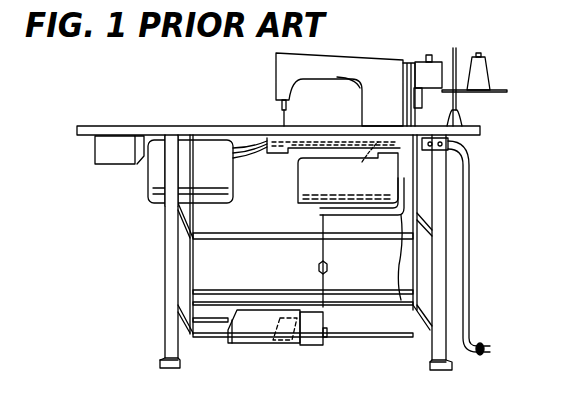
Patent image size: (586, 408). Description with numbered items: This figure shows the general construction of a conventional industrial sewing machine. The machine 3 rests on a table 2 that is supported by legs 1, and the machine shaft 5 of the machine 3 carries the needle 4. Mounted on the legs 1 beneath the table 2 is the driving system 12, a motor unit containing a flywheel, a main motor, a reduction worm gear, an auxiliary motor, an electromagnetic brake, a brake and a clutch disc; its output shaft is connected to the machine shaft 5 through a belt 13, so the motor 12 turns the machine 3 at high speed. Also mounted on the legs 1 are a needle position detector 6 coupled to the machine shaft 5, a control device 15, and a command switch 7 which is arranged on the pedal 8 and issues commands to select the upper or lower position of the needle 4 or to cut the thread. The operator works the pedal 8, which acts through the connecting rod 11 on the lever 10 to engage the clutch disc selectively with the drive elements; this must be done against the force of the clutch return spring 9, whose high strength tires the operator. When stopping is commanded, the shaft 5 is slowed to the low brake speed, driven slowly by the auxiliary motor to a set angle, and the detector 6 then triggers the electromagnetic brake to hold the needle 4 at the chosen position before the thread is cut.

The legs 1 is at (168, 287).
The table 2 is at (123, 132).
The machine 3 is at (353, 65).
The needle 4 is at (277, 117).
The machine shaft 5 is at (407, 62).
The needle position detector 6 is at (432, 72).
The command switch 7 is at (273, 340).
The pedal 8 is at (310, 338).
The clutch return spring 9 is at (400, 226).
The lever 10 is at (350, 216).
The connecting rod 11 is at (318, 266).
The driving system 12 is at (298, 172).
The belt 13 is at (412, 115).
The control device 15 is at (228, 188).